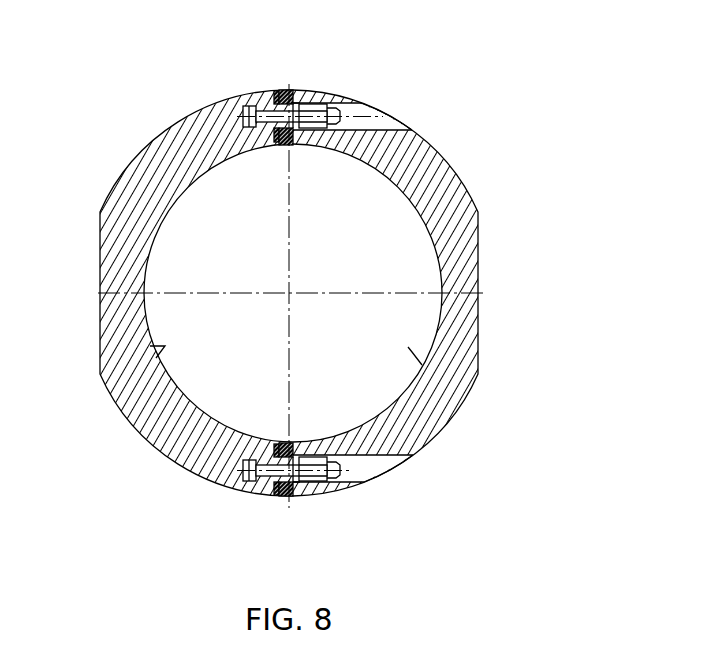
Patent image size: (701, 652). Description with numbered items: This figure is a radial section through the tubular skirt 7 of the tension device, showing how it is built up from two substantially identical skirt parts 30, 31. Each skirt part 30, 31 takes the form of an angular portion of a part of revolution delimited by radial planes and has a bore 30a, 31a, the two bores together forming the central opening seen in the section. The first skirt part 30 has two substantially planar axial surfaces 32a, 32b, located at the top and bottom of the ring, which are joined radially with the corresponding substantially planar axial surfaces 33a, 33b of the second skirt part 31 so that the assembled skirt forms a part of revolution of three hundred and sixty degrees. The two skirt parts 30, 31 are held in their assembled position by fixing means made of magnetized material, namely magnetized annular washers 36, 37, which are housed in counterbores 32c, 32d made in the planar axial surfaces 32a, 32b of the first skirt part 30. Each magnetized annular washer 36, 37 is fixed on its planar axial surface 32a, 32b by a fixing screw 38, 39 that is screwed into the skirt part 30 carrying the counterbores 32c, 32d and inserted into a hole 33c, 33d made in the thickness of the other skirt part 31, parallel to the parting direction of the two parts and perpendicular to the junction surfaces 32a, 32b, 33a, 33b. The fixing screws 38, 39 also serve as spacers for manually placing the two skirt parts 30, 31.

The tubular skirt 7 is at (430, 62).
The first skirt part 30 is at (108, 194).
The second skirt part 31 is at (471, 198).
The bore of first skirt part 30a is at (150, 346).
The bore of second skirt part 31a is at (408, 347).
The planar axial surface 32a is at (282, 496).
The planar axial surface 32b is at (282, 90).
The counterbore 32c is at (276, 494).
The counterbore 32d is at (276, 93).
The planar axial surface 33a is at (288, 497).
The planar axial surface 33b is at (289, 90).
The hole 33c is at (365, 457).
The hole 33d is at (368, 115).
The magnetized annular washer 36 is at (280, 442).
The magnetized annular washer 37 is at (280, 147).
The fixing screw 38 is at (318, 490).
The fixing screw 39 is at (318, 101).